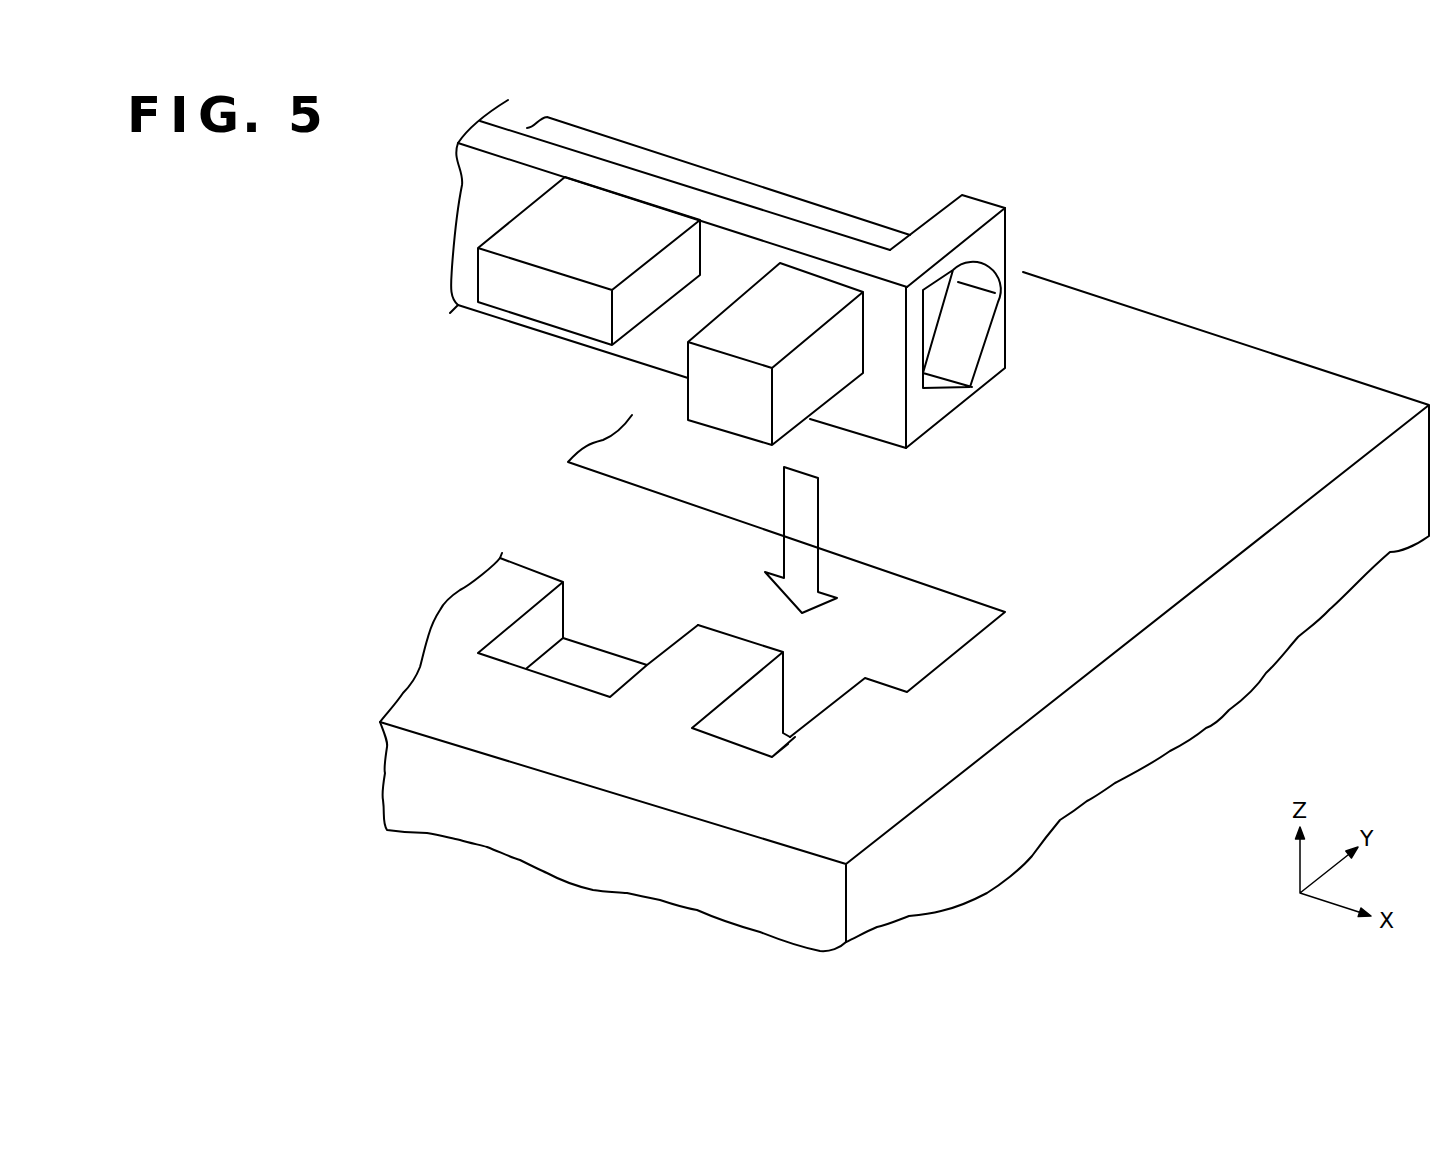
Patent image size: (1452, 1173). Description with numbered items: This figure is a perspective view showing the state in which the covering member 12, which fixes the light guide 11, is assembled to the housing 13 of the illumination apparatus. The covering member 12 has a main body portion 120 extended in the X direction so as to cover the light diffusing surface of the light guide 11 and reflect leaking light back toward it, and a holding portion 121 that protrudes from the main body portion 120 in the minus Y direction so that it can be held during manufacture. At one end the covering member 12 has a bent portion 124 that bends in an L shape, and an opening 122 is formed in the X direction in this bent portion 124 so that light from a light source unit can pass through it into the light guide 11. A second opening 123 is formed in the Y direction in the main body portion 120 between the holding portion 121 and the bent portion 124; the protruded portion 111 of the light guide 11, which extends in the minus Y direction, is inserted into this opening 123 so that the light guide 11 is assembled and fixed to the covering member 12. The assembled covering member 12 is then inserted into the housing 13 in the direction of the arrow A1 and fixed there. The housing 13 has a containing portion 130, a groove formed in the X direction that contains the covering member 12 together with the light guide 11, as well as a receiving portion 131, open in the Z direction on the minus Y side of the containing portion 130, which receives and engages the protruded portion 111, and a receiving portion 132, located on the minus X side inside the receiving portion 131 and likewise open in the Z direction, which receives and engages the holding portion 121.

The light guide 11 is at (775, 207).
The covering member 12 is at (988, 292).
The housing 13 is at (656, 751).
The protruded portion 111 is at (813, 388).
The main body portion 120 is at (490, 188).
The holding portion 121 is at (600, 230).
The opening 122 is at (946, 316).
The opening 123 is at (864, 377).
The bent portion 124 is at (968, 210).
The containing portion 130 is at (931, 606).
The receiving portion 131 is at (799, 681).
The receiving portion 132 is at (584, 647).
The arrow A1 is at (784, 555).